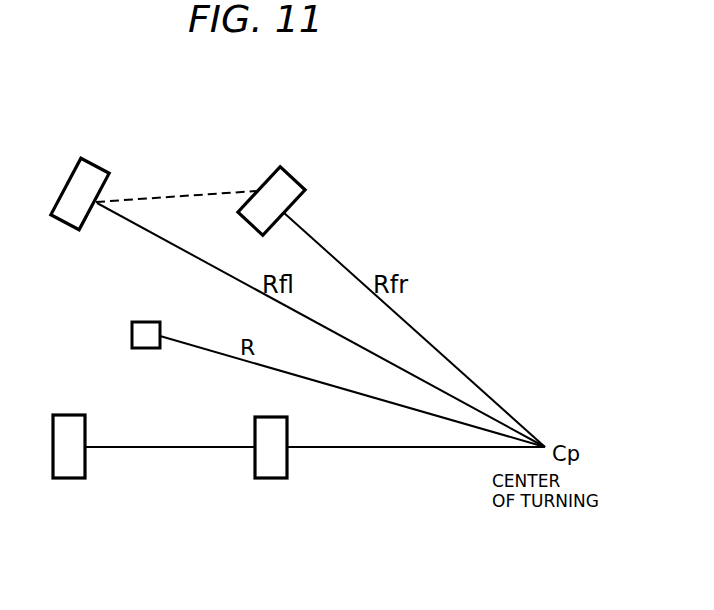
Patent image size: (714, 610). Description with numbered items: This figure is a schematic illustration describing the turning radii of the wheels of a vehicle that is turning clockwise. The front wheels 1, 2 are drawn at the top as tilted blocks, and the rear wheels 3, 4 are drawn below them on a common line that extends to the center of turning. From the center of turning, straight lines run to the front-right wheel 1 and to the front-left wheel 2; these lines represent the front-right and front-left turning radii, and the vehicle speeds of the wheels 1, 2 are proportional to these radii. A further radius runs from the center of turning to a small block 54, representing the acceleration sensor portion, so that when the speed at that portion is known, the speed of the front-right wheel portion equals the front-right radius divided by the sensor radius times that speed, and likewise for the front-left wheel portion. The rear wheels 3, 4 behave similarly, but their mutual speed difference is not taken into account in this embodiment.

The front-right wheel 1 is at (283, 175).
The front-left wheel 2 is at (93, 170).
The rear wheel 3 is at (270, 472).
The rear wheel 4 is at (70, 472).
The sensor 54 is at (145, 323).